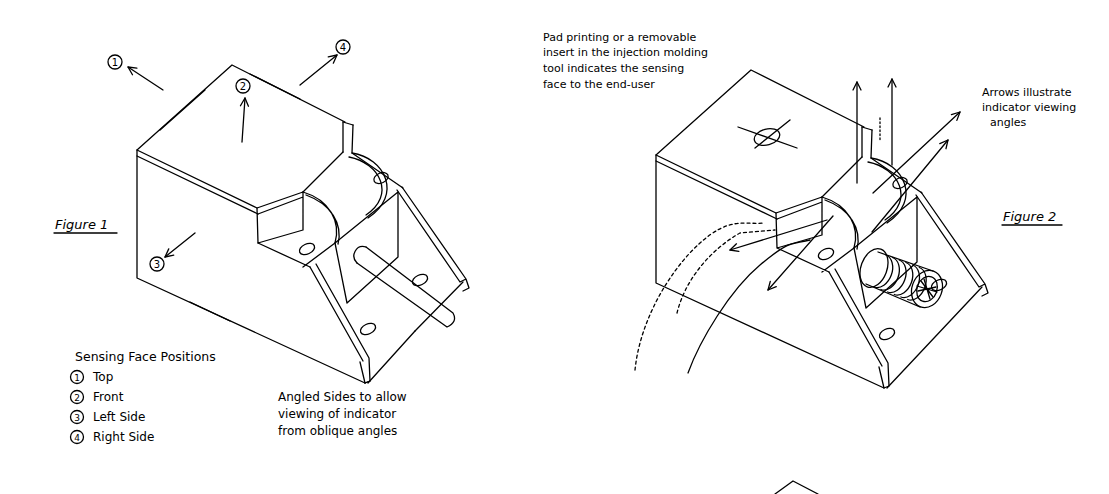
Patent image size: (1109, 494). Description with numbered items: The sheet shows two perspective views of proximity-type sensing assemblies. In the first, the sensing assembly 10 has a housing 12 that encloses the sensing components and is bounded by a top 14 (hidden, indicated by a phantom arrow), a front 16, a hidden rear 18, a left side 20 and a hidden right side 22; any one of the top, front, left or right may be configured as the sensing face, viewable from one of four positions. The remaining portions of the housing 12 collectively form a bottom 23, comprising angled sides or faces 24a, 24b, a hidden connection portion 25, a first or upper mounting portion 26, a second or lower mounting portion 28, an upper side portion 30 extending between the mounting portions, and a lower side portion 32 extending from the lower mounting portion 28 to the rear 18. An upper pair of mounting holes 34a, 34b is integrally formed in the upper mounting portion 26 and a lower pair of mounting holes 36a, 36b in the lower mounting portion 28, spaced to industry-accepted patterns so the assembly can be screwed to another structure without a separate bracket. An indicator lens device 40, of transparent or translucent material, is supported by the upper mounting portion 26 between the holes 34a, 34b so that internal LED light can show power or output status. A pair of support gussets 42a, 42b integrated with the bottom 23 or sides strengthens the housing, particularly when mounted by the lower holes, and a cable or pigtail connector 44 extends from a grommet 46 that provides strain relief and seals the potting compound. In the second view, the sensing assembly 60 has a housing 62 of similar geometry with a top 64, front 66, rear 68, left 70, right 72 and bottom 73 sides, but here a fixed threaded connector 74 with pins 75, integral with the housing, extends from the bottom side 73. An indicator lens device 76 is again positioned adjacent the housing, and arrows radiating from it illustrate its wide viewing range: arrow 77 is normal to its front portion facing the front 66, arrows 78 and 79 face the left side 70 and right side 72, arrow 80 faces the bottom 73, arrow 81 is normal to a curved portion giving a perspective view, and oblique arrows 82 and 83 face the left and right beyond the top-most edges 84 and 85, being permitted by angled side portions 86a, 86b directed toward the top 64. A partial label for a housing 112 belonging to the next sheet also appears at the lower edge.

In FIG. 1, the sensing assembly 10 is at (98, 163).
In FIG. 1, the housing 12 is at (293, 112).
In FIG. 1, the top 14 is at (193, 87).
In FIG. 1, the front 16 is at (282, 148).
In FIG. 1, the rear 18 is at (183, 313).
In FIG. 1, the left side 20 is at (216, 278).
In FIG. 1, the right side 22 is at (282, 78).
In FIG. 1, the bottom 23 is at (409, 363).
In FIG. 1, the side or face 24a is at (314, 372).
In FIG. 1, the side or face 24b is at (356, 140).
In FIG. 1, the connection portion 25 is at (352, 122).
In FIG. 1, the first (upper) mounting portion 26 is at (268, 250).
In FIG. 1, the second (lower) mounting portion 28 is at (402, 335).
In FIG. 1, the first (upper) side portion 30 is at (386, 238).
In FIG. 1, the second (lower) side portion 32 is at (428, 322).
In FIG. 1, the upper mounting hole 34a is at (307, 249).
In FIG. 1, the upper mounting hole 34b is at (388, 178).
In FIG. 1, the lower mounting hole 36a is at (382, 338).
In FIG. 1, the lower mounting hole 36b is at (432, 281).
In FIG. 1, the indicator lens device 40 is at (353, 178).
In FIG. 1, the support gusset 42a is at (352, 320).
In FIG. 1, the support gusset 42b is at (428, 203).
In FIG. 1, the connector 44 is at (452, 312).
In FIG. 1, the grommet 46 is at (405, 229).
In FIG. 2, the sensing assembly 60 is at (663, 128).
In FIG. 2, the housing 62 is at (783, 92).
In FIG. 2, the top 64 is at (690, 117).
In FIG. 2, the front 66 is at (776, 164).
In FIG. 2, the rear 68 is at (758, 128).
In FIG. 2, the left side 70 is at (738, 280).
In FIG. 2, the right side 72 is at (824, 98).
In FIG. 2, the bottom side 73 is at (926, 378).
In FIG. 2, the threaded connector 74 is at (909, 318).
In FIG. 2, the pins 75 is at (942, 281).
In FIG. 2, the indicator lens device 76 is at (876, 216).
In FIG. 2, the arrow 77 is at (872, 163).
In FIG. 2, the arrow 78 is at (785, 258).
In FIG. 2, the arrow 79 is at (927, 135).
In FIG. 2, the arrow 80 is at (928, 232).
In FIG. 2, the arrow 81 is at (930, 163).
In FIG. 2, the arrow 82 is at (746, 280).
In FIG. 2, the arrow 83 is at (906, 110).
In FIG. 2, the left top most edge 84 is at (740, 316).
In FIG. 2, the right top most edge 85 is at (880, 122).
In FIG. 2, the side portion 86a is at (698, 311).
In FIG. 2, the side portion 86b is at (885, 157).
In FIG. 2, the housing 112 is at (864, 487).